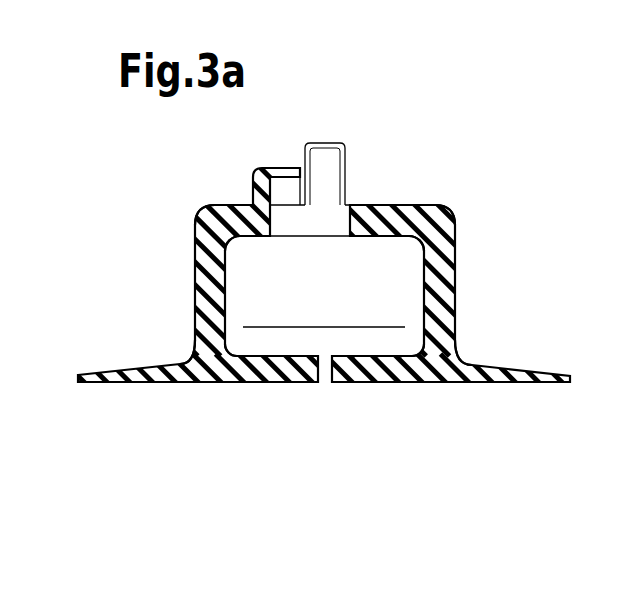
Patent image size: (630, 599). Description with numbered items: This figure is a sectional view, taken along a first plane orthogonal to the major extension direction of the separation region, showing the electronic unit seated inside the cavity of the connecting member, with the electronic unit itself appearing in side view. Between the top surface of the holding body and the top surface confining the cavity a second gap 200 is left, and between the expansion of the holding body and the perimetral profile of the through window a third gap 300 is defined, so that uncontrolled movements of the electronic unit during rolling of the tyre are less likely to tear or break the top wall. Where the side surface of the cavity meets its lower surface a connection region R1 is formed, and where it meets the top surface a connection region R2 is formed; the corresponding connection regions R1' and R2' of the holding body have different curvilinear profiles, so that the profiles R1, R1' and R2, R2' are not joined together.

The third gap 300 is at (348, 204).
The second gap 200 is at (415, 206).
The connection region R2 is at (341, 175).
The connection region R2' is at (258, 201).
The connection region R1 is at (322, 399).
The connection region R1' is at (406, 337).